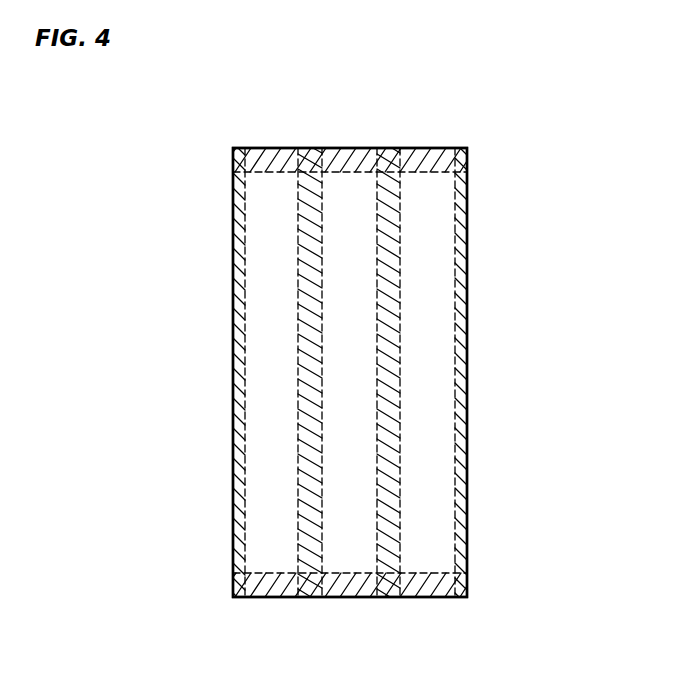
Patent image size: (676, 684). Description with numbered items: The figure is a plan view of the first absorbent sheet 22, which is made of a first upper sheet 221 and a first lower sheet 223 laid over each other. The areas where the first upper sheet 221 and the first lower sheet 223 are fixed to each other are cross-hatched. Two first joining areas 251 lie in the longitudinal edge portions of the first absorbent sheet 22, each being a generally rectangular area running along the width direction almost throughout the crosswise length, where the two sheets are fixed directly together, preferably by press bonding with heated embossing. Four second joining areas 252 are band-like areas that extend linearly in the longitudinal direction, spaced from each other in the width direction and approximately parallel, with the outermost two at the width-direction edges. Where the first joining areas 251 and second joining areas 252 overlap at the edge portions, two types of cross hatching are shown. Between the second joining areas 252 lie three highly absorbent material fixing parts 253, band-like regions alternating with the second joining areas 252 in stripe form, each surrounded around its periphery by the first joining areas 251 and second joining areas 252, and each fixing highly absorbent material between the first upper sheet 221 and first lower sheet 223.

The first absorbent sheet 22 is at (231, 113).
The first upper sheet 221 is at (468, 230).
The first lower sheet 223 is at (468, 263).
The first joining area 251 is at (352, 159).
The second joining area 252 is at (236, 338).
The highly absorbent material fixing part 253 is at (345, 442).